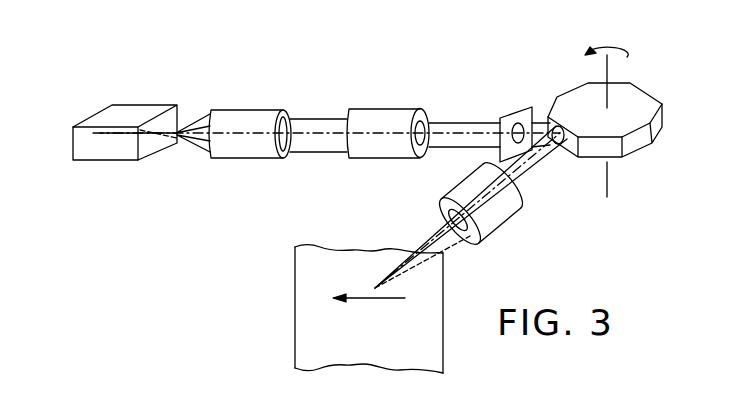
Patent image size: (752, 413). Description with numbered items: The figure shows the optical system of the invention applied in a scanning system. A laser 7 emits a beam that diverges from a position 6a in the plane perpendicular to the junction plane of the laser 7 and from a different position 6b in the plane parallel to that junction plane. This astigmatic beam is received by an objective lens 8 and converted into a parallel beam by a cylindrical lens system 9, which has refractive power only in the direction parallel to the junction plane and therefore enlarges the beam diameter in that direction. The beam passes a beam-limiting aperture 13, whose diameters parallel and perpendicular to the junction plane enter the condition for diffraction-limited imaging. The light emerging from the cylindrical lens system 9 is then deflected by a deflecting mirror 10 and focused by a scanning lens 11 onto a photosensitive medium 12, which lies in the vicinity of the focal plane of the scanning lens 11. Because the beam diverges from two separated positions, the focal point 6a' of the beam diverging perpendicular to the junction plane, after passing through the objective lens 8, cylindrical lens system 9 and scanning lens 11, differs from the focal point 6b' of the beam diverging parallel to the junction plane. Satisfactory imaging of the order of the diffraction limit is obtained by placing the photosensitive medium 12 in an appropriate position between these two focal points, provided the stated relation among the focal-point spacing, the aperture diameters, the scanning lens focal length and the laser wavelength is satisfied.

The laser 7 is at (78, 142).
The beam divergent position (perpendicular to junction plane) 6a is at (175, 155).
The beam divergent position (parallel to junction plane) 6b is at (124, 164).
The objective lens 8 is at (247, 118).
The cylindrical lens system 9 is at (383, 117).
The beam-limiting aperture 13 is at (523, 115).
The deflecting mirror 10 is at (637, 95).
The scanning lens 11 is at (505, 213).
The photosensitive medium 12 is at (437, 355).
The focal point (beam perpendicular to junction plane) 6a' is at (363, 317).
The focal point (beam parallel to junction plane) 6b' is at (471, 217).